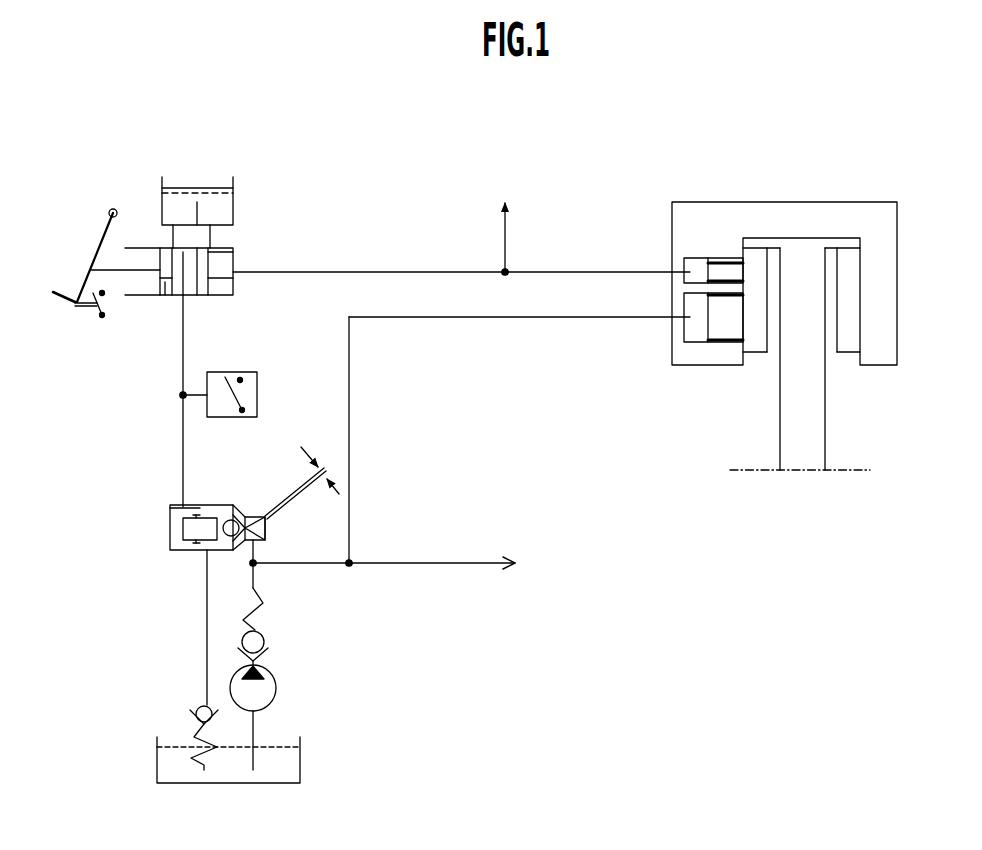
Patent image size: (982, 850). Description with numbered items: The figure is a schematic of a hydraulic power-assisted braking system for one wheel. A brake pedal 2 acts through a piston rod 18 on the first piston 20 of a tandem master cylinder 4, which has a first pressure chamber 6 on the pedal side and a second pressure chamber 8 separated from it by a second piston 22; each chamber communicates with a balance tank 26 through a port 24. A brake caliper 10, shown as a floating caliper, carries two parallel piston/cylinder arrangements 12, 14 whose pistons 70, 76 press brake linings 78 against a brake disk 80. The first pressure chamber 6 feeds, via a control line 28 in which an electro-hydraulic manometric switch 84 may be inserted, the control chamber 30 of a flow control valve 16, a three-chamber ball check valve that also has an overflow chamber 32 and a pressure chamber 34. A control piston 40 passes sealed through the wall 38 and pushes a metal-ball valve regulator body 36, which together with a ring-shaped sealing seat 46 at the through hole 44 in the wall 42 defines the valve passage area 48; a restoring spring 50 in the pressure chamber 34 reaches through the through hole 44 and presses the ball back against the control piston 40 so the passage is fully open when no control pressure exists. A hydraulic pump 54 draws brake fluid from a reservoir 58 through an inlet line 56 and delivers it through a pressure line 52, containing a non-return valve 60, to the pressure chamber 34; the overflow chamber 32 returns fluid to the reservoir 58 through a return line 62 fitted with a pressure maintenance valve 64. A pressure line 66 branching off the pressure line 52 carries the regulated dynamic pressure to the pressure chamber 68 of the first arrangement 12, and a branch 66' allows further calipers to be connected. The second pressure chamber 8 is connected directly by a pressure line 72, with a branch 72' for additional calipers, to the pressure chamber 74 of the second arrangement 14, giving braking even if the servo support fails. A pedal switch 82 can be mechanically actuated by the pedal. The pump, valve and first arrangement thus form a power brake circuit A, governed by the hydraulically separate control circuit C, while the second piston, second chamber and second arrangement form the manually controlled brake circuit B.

The brake pedal 2 is at (100, 243).
The master cylinder 4 is at (238, 265).
The first pressure chamber 6 is at (188, 285).
The second pressure chamber 8 is at (225, 255).
The brake caliper 10 is at (848, 198).
The first piston/cylinder arrangement 12 is at (686, 347).
The second piston/cylinder arrangement 14 is at (668, 252).
The flow control valve 16 is at (143, 526).
The piston rod 18 is at (117, 268).
The first piston 20 is at (165, 292).
The second piston 22 is at (210, 279).
The port 24 is at (176, 240).
The balance tank 26 is at (212, 190).
The control line 28 is at (183, 356).
The control chamber 30 is at (178, 548).
The overflow chamber 32 is at (220, 543).
The pressure chamber 34 is at (252, 545).
The valve regulator body 36 is at (205, 508).
The wall 38 is at (170, 508).
The control piston 40 is at (185, 530).
The wall 42 is at (218, 518).
The through hole 44 is at (255, 520).
The sealing seat 46 is at (232, 520).
The valve passage area 48 is at (324, 468).
The restoring spring 50 is at (262, 530).
The pressure line 52 is at (258, 587).
The hydraulic pump 54 is at (278, 686).
The inlet line 56 is at (258, 722).
The reservoir 58 is at (290, 762).
The non-return valve 60 is at (270, 637).
The return line 62 is at (207, 673).
The pressure maintenance valve 64 is at (186, 718).
The pressure line 66 is at (518, 441).
The branch 66' is at (384, 535).
The pressure chamber 68 is at (698, 332).
The piston 70 is at (727, 332).
The pressure line 72 is at (461, 244).
The branch 72' is at (532, 239).
The pressure chamber 74 is at (697, 268).
The piston 76 is at (720, 268).
The brake linings 78 is at (845, 265).
The brake disk 80 is at (815, 403).
The pedal switch 82 is at (93, 318).
The electro-hydraulic manometric switch 84 is at (232, 372).
The power brake circuit A is at (366, 432).
The brake circuit B is at (353, 258).
The control circuit C is at (170, 401).